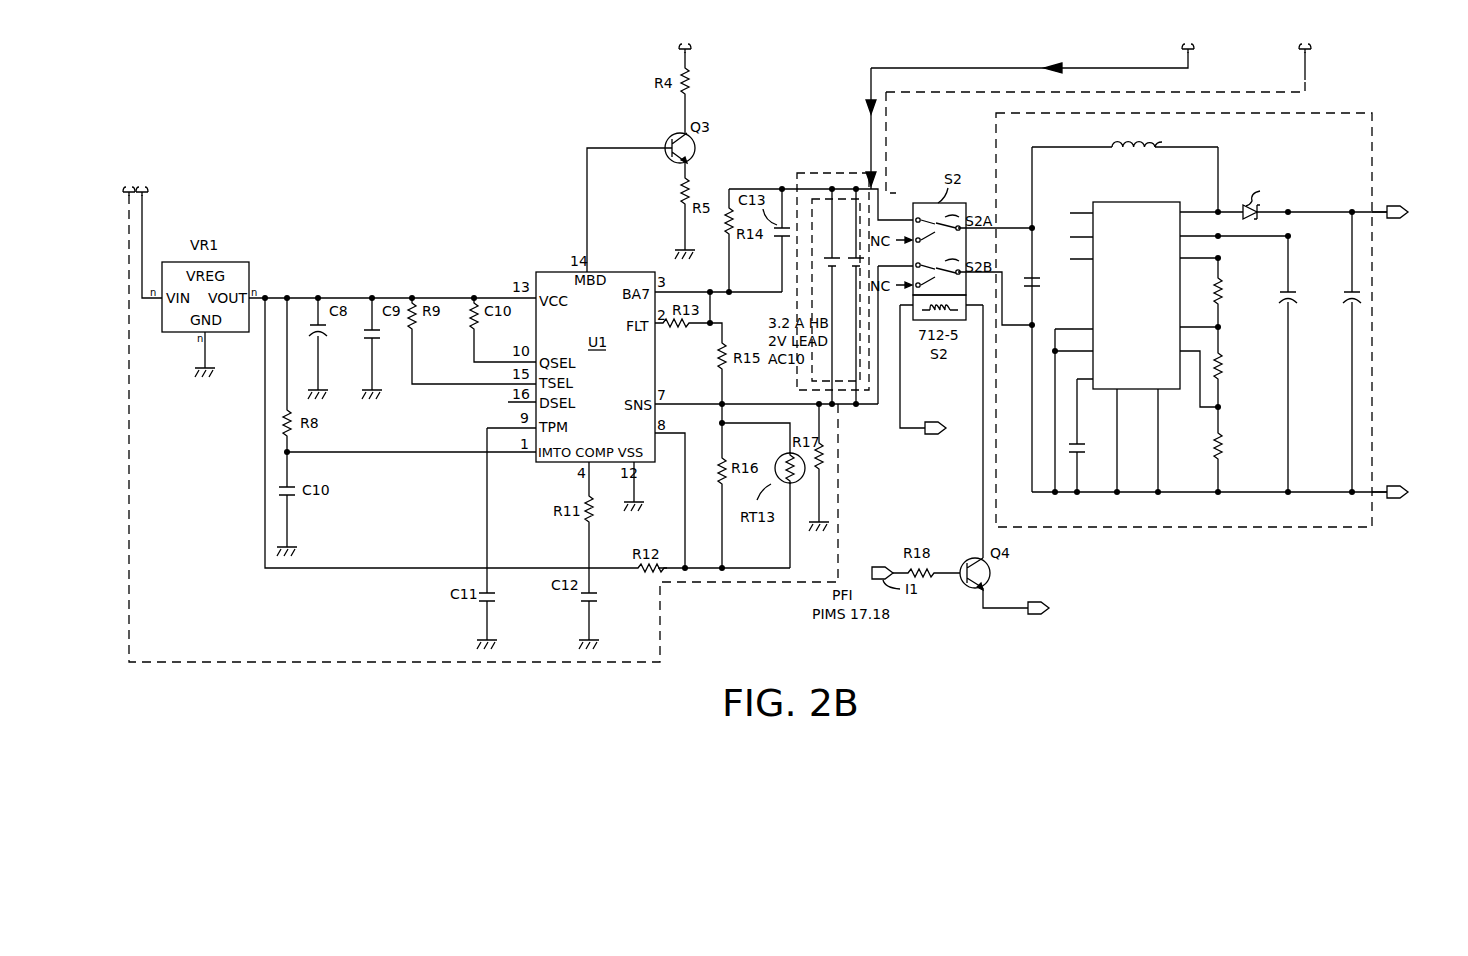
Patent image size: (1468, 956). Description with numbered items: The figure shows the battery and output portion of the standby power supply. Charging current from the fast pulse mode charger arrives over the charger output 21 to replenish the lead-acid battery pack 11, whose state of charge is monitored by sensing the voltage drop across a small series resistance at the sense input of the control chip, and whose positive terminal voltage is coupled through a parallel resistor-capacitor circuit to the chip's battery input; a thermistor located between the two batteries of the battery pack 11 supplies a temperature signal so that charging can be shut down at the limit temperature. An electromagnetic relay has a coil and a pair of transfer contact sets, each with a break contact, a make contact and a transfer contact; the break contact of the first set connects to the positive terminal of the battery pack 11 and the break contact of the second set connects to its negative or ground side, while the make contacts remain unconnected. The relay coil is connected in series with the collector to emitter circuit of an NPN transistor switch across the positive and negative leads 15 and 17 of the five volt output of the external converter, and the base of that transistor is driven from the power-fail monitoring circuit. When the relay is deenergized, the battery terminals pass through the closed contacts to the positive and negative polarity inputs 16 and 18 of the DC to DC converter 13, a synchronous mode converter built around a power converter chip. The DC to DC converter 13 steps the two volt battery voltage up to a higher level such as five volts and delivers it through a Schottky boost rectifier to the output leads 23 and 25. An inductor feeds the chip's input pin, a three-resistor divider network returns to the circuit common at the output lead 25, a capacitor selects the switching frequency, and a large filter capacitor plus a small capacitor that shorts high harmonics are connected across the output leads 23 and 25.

The lead-acid battery pack 11 is at (880, 197).
The DC to DC converter 13 is at (994, 138).
The positive lead of +5V DC output 15 is at (913, 424).
The positive polarity input of converter 16 is at (1024, 224).
The negative lead of +5V DC output 17 is at (1010, 612).
The negative polarity input of converter 18 is at (1027, 323).
The charger output 21 is at (1108, 68).
The output lead 23 is at (1352, 210).
The output lead 25 is at (1386, 492).